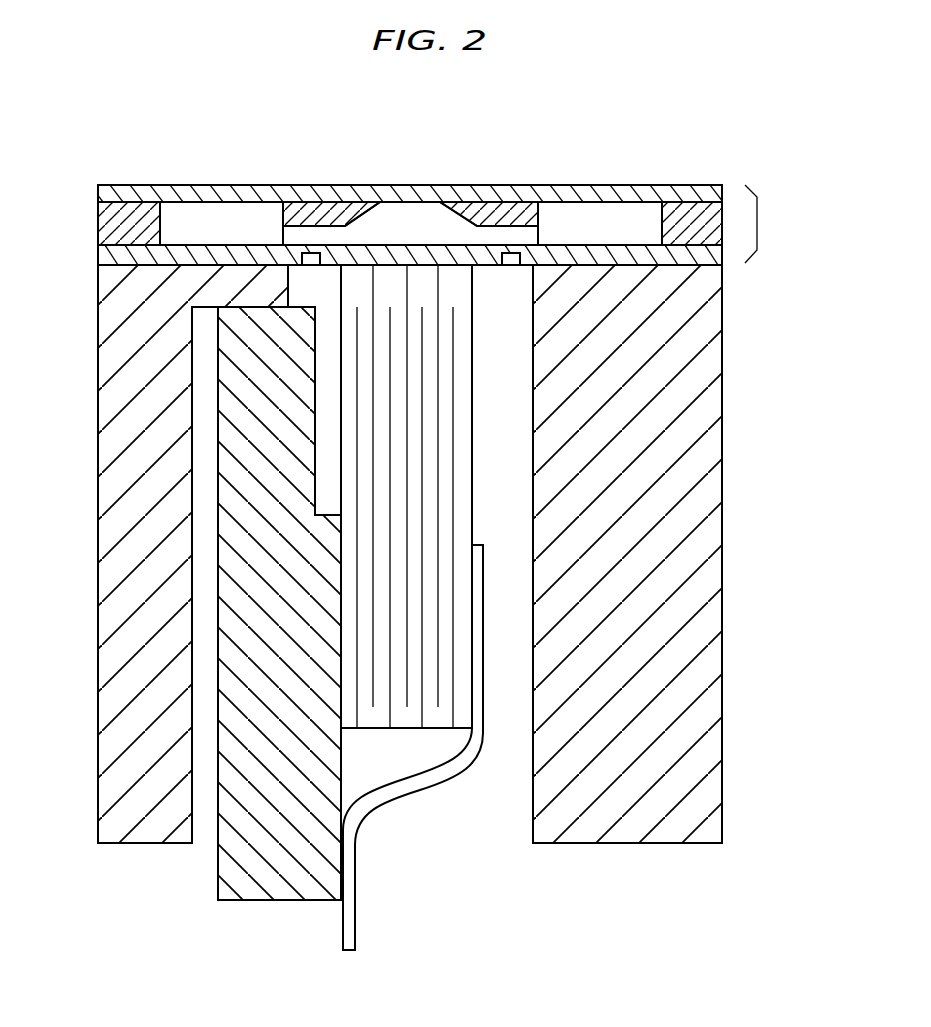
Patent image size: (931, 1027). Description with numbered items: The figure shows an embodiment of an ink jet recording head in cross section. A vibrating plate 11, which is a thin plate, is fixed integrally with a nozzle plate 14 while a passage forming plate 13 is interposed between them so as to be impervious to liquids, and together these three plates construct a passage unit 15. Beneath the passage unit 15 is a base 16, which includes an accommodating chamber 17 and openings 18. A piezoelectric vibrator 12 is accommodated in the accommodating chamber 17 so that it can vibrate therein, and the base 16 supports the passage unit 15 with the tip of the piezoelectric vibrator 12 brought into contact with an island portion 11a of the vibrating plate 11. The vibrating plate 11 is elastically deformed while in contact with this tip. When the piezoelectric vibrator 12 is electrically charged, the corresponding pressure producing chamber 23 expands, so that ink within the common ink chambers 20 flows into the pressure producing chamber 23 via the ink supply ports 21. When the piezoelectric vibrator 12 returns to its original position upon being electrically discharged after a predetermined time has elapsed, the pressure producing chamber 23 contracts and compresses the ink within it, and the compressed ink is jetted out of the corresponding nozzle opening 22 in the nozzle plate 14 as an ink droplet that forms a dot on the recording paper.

The vibrating plate 11 is at (98, 262).
The island portion 11a is at (487, 267).
The piezoelectric vibrator 12 is at (422, 665).
The passage forming plate 13 is at (98, 230).
The nozzle plate 14 is at (98, 192).
The passage unit 15 is at (771, 224).
The base 16 is at (710, 582).
The accommodating chamber 17 is at (493, 478).
The openings 18 is at (508, 265).
The common ink chambers 20 is at (207, 217).
The ink supply ports 21 is at (314, 232).
The nozzle opening 22 is at (410, 190).
The pressure producing chamber 23 is at (372, 220).